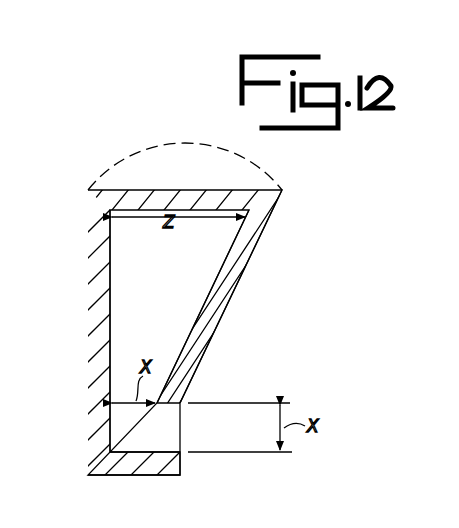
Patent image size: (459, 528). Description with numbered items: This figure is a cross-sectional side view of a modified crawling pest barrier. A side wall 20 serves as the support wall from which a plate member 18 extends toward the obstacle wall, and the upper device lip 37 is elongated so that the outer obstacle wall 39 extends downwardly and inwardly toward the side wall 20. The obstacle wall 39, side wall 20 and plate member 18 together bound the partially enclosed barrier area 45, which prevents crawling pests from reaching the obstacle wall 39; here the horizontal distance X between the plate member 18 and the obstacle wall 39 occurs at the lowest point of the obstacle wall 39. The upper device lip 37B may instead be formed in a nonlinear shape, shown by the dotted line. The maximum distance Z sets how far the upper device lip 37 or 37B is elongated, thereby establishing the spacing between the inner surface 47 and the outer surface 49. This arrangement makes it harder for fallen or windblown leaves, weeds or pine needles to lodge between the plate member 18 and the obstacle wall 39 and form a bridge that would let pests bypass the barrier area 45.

The side wall 20 is at (92, 300).
The upper device lip 37 is at (195, 199).
The upper device lip 37B is at (138, 155).
The outer obstacle wall 39 is at (238, 286).
The inner surface 47 is at (212, 283).
The outer surface 49 is at (112, 302).
The barrier area 45 is at (143, 426).
The plate member 18 is at (137, 466).